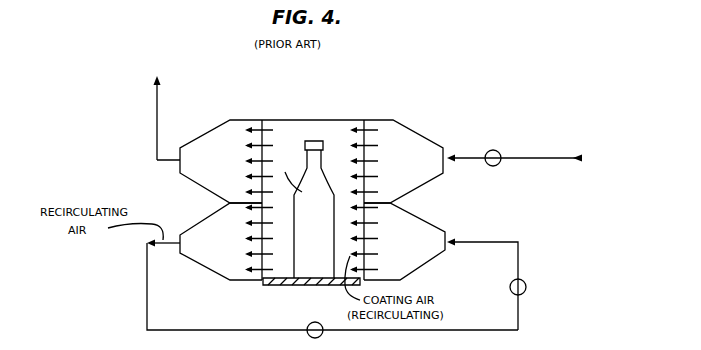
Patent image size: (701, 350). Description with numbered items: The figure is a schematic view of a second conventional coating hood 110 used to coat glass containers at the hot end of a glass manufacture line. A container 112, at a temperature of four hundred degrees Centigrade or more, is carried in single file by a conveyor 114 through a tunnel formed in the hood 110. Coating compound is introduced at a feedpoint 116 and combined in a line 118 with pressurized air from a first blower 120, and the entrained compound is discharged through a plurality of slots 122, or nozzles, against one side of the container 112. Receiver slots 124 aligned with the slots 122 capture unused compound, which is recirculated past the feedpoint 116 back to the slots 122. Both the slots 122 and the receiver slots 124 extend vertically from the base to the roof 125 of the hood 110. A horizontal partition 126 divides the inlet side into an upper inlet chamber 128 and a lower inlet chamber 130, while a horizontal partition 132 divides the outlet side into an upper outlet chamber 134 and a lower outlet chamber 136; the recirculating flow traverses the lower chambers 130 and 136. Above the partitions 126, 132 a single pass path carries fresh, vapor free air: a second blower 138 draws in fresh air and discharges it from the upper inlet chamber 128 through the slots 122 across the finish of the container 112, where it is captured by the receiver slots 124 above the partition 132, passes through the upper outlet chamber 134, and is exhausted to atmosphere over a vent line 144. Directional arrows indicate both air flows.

The coating hood 110 is at (428, 128).
The container 112 is at (264, 162).
The conveyor 114 is at (262, 284).
The feedpoint 116 is at (325, 316).
The line 118 is at (519, 259).
The first blower 120 is at (525, 287).
The slots 122 is at (373, 178).
The receiver slots 124 is at (260, 170).
The roof 125 is at (262, 119).
The horizontal partition 126 is at (390, 203).
The upper inlet chamber 128 is at (386, 137).
The lower inlet chamber 130 is at (428, 262).
The horizontal partition 132 is at (240, 203).
The upper outlet chamber 134 is at (206, 134).
The lower outlet chamber 136 is at (201, 262).
The second blower 138 is at (492, 150).
The vent line 144 is at (158, 99).